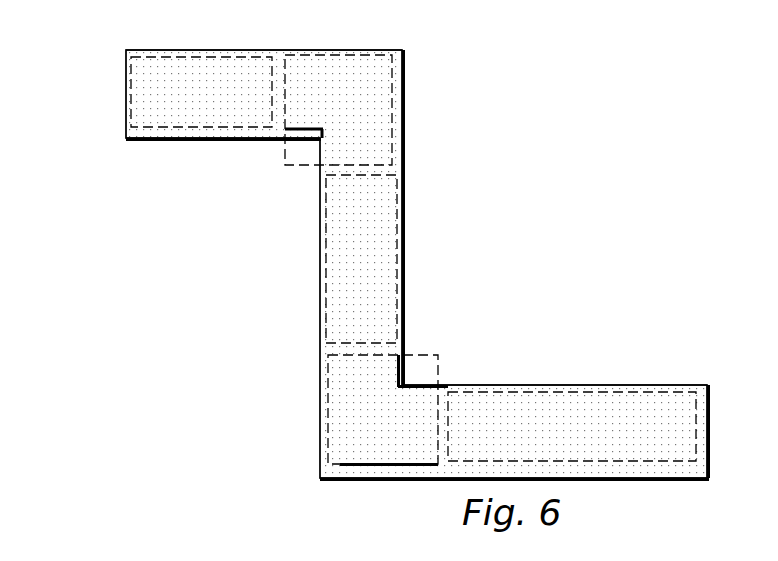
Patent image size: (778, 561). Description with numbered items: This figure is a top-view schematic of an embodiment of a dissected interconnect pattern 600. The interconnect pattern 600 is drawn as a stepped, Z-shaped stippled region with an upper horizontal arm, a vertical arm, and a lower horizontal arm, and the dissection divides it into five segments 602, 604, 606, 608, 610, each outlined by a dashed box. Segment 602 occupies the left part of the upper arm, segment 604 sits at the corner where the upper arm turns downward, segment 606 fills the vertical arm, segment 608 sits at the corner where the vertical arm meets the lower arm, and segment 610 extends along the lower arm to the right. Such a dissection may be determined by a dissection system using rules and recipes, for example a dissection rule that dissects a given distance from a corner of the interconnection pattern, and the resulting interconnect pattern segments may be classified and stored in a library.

The interconnect pattern 600 is at (128, 89).
The segment 602 is at (222, 109).
The segment 604 is at (358, 108).
The segment 606 is at (382, 276).
The segment 608 is at (403, 442).
The segment 610 is at (593, 441).